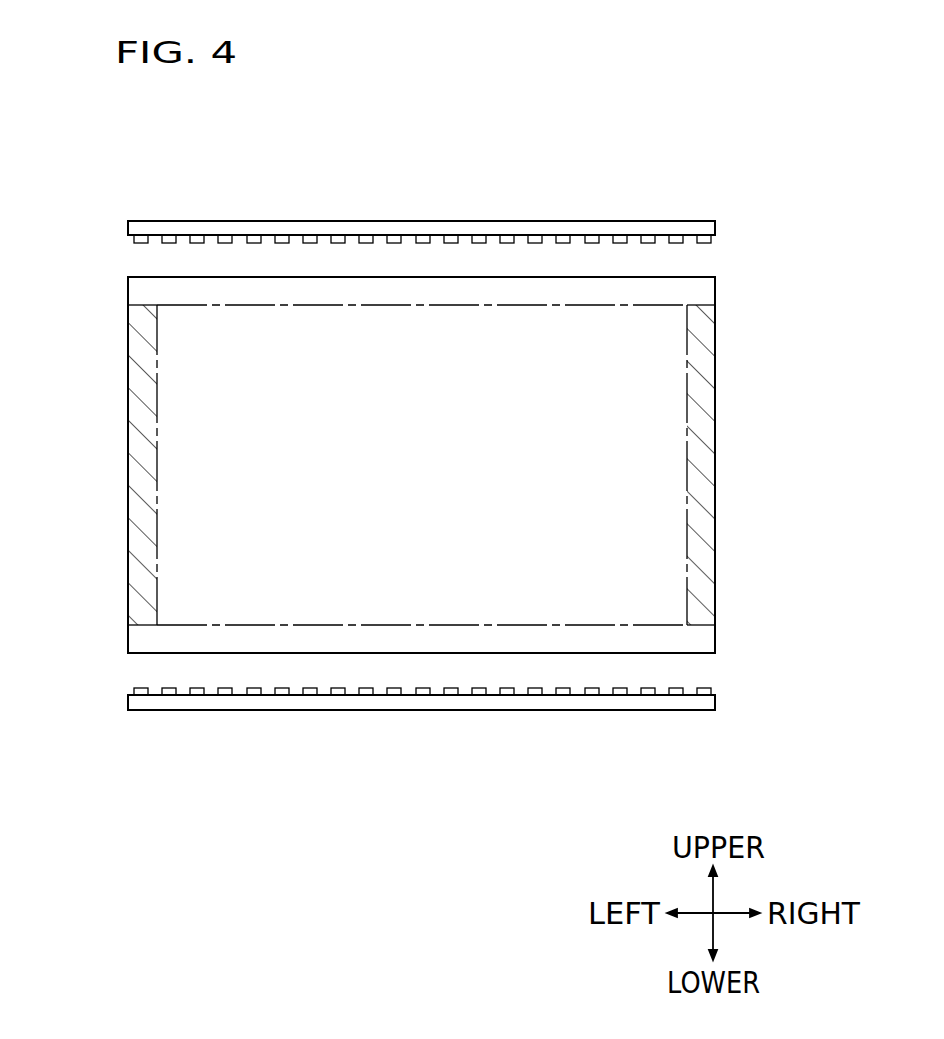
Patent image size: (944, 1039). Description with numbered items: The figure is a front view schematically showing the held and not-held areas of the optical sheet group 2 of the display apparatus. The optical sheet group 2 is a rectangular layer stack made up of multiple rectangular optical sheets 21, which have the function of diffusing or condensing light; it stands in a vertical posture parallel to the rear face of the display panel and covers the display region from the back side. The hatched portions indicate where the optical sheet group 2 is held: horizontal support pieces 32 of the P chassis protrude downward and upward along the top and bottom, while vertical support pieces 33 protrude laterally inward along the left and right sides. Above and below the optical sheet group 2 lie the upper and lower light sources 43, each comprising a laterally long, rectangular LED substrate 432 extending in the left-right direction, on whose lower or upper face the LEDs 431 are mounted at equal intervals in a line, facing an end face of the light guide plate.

The optical sheet group 2 is at (479, 465).
The optical sheet 21 is at (658, 408).
The horizontal support piece 32 is at (642, 292).
The vertical support piece 33 is at (138, 463).
The light source 43 is at (421, 467).
The LED 431 is at (378, 146).
The LED substrate 432 is at (327, 228).